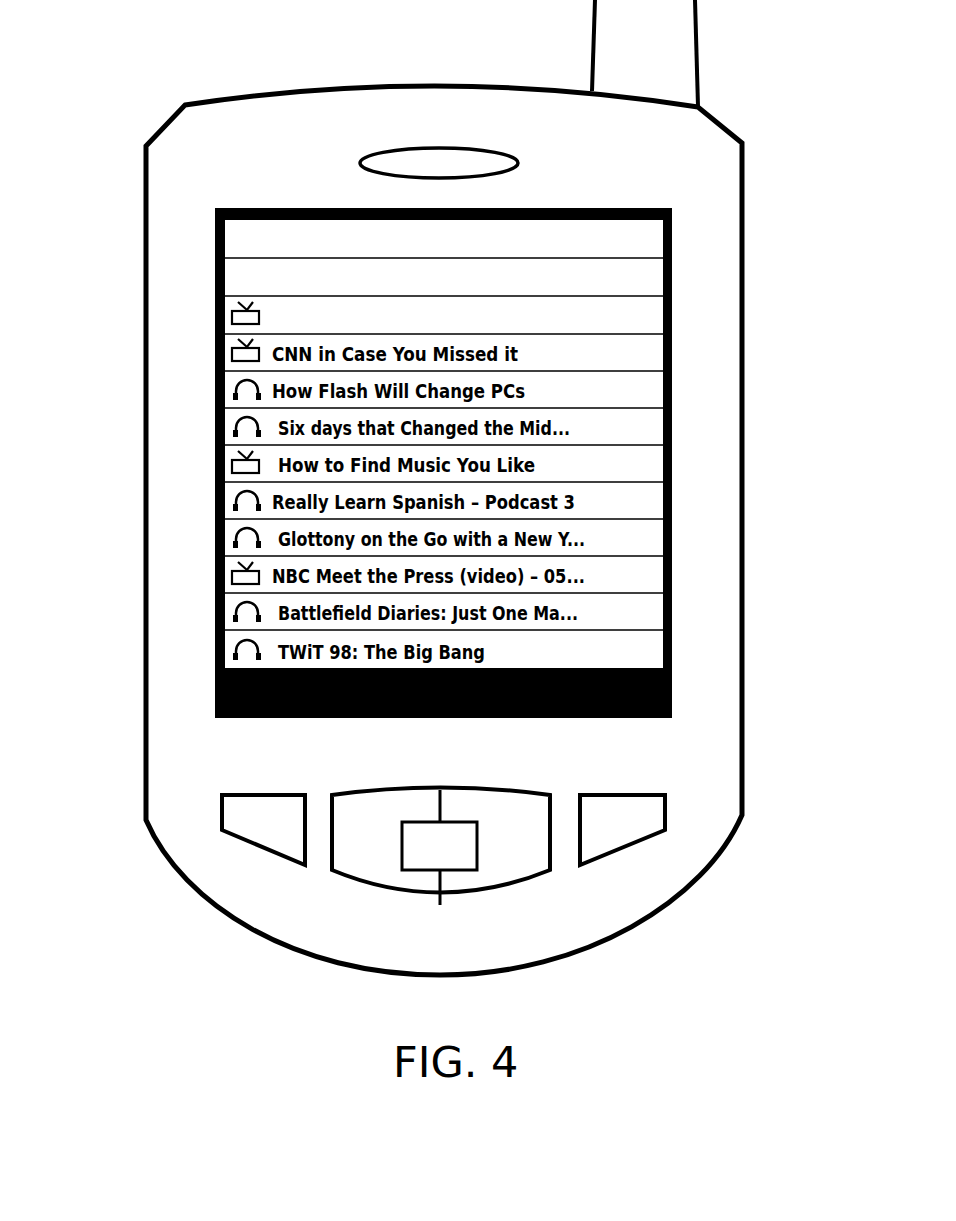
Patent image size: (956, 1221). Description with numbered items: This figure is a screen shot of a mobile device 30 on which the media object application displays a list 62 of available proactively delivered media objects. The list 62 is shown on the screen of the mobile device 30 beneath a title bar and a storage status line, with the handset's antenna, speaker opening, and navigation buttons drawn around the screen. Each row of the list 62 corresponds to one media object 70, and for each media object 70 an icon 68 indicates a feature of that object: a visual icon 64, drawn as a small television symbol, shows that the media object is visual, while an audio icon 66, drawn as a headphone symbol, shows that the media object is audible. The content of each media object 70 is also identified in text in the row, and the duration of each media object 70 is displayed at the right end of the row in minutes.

The mobile device 30 is at (766, 144).
The list 62 is at (598, 322).
The visual icon 64 is at (215, 316).
The audio icon 66 is at (217, 388).
The icon 68 is at (141, 481).
The media object 70 is at (293, 313).